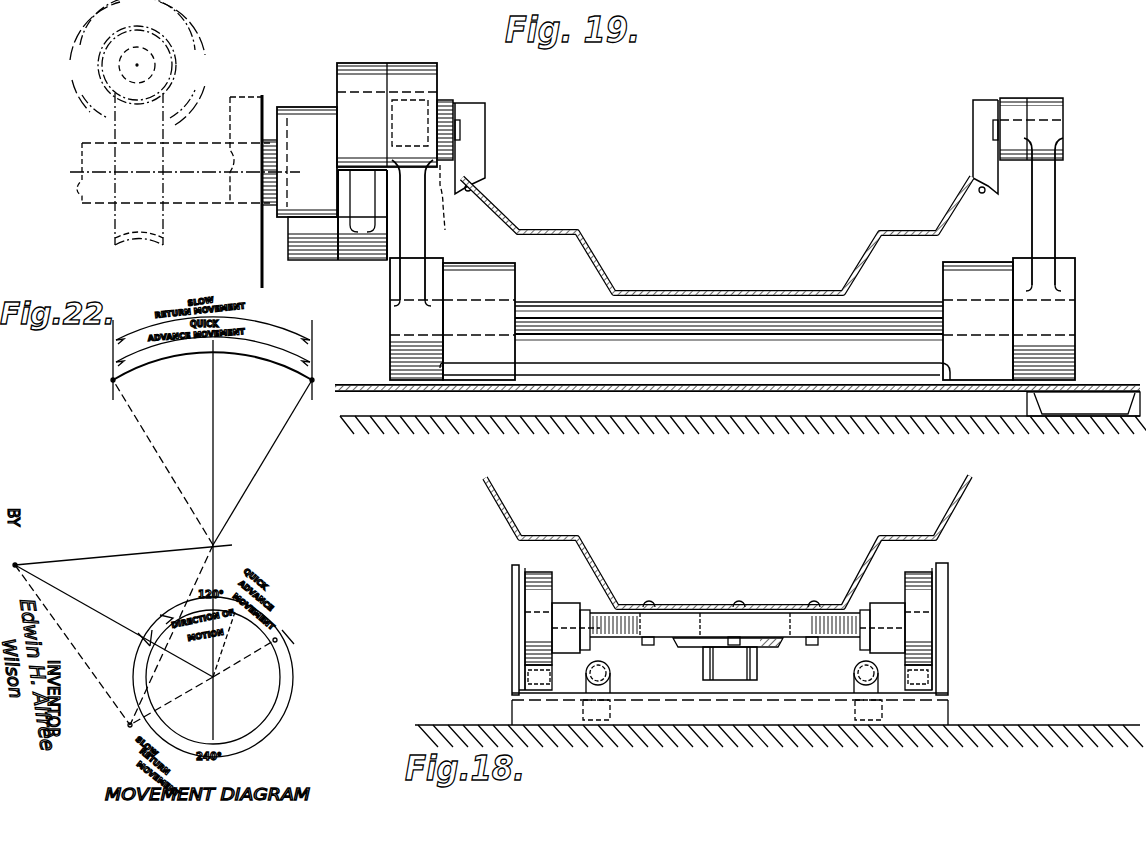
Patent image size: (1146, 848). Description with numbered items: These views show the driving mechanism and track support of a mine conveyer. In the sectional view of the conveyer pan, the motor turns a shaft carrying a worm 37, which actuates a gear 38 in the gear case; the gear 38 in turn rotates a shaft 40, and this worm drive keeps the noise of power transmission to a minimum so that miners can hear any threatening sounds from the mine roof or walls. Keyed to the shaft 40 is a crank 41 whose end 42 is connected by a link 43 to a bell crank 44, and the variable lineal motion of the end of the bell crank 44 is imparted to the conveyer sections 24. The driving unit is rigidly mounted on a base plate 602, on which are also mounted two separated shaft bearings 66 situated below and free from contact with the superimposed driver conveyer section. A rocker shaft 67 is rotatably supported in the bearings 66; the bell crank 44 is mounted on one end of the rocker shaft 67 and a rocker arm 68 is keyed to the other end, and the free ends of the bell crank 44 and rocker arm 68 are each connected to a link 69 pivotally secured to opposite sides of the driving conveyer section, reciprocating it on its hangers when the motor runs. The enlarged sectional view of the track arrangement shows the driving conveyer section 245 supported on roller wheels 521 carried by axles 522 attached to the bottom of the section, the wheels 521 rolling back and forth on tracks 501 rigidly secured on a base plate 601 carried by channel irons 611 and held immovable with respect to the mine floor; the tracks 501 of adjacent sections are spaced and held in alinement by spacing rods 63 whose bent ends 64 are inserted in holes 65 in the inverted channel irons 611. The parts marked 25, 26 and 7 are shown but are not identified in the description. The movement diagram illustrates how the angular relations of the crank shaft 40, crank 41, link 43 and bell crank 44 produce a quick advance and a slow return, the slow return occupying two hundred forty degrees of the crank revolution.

In FIG. 19, the worm 37 is at (172, 62).
In FIG. 19, the gear 38 is at (118, 139).
In FIG. 19, the shaft 40 is at (204, 206).
In FIG. 19, the crank 41 is at (300, 130).
In FIG. 22, the crank 41 is at (183, 668).
In FIG. 19, the end of crank 42 is at (272, 268).
In FIG. 19, the link 43 is at (362, 72).
In FIG. 22, the link 43 is at (105, 618).
In FIG. 19, the bell crank 44 is at (421, 232).
In FIG. 22, the bell crank 44 is at (147, 433).
In FIG. 19, the link 69 is at (455, 98).
In FIG. 19, the conveyer section 24 is at (512, 206).
In FIG. 19, the shaft bearing 66 is at (508, 280).
In FIG. 19, the rocker shaft 67 is at (566, 304).
In FIG. 19, the rocker arm 68 is at (1056, 214).
In FIG. 19, the base plate 602 is at (472, 393).
In FIG. 18, the driving conveyer section 245 is at (607, 580).
In FIG. 18, the roller wheel 521 is at (540, 580).
In FIG. 18, the axle 522 is at (612, 634).
In FIG. 18, the track 501 is at (512, 660).
In FIG. 18, the base plate 601 is at (512, 693).
In FIG. 18, the channel iron 611 is at (512, 716).
In FIG. 18, the spacing rod 63 is at (625, 670).
In FIG. 18, the bent end 64 is at (598, 688).
In FIG. 18, the hole 65 is at (605, 725).
In FIG. 18, the support block 26 is at (716, 668).
In FIG. 18, the plate 25 is at (776, 648).
In FIG. 18, the ground 7 is at (712, 728).